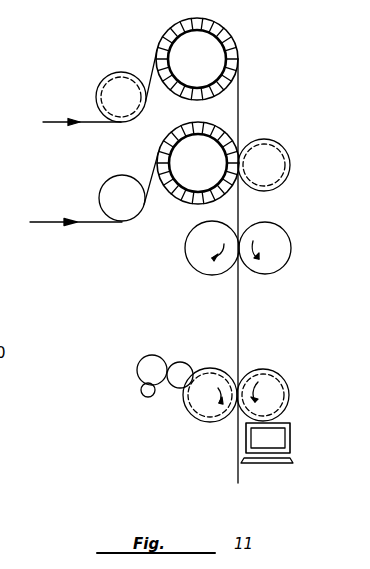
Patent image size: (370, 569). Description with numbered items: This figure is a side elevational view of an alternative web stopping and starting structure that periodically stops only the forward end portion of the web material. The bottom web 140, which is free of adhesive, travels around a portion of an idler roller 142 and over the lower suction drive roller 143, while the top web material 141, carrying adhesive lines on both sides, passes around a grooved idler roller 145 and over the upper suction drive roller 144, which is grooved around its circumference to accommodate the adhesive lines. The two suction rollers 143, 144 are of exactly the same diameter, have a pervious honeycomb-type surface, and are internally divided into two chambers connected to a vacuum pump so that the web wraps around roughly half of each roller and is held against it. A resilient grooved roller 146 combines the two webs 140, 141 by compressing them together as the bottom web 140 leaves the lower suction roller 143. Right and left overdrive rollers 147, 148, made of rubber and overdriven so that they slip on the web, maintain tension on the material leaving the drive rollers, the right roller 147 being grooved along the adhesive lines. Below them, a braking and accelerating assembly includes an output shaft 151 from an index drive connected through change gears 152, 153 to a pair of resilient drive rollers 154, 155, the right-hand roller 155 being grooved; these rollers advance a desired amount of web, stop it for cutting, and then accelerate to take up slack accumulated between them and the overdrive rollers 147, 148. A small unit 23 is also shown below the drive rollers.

The bottom web 140 is at (48, 223).
The top web material 141 is at (55, 122).
The idler roller 142 is at (110, 186).
The lower suction drive roller 143 is at (172, 197).
The upper suction drive roller 144 is at (228, 38).
The grooved idler roller 145 is at (118, 88).
The resilient grooved roller 146 is at (276, 155).
The right overdrive roller 147 is at (194, 257).
The left overdrive roller 148 is at (274, 240).
The output shaft 151 is at (143, 394).
The change gear 152 is at (150, 371).
The change gear 153 is at (184, 368).
The drive roller 154 is at (202, 417).
The right-hand drive roller 155 is at (276, 383).
The sensor/monitor 23 is at (293, 462).